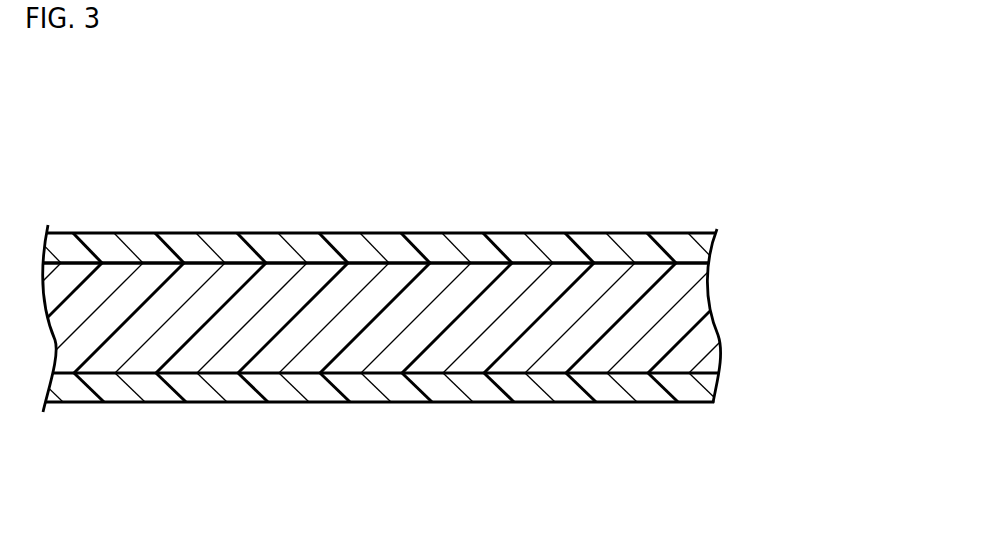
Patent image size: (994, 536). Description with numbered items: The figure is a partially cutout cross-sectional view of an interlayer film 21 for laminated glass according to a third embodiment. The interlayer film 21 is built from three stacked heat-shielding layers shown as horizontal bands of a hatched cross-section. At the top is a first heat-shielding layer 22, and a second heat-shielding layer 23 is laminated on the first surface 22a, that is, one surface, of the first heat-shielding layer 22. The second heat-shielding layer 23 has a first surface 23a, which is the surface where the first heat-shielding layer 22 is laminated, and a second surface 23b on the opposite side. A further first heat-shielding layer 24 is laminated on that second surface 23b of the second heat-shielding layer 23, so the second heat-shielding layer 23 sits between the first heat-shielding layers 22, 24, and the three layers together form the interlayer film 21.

The interlayer film 21 is at (135, 106).
The first heat-shielding layer 22 is at (736, 247).
The first surface 22a is at (430, 263).
The second heat-shielding layer 23 is at (735, 322).
The first surface 23a is at (527, 260).
The second surface 23b is at (545, 373).
The first heat-shielding layer 24 is at (737, 371).